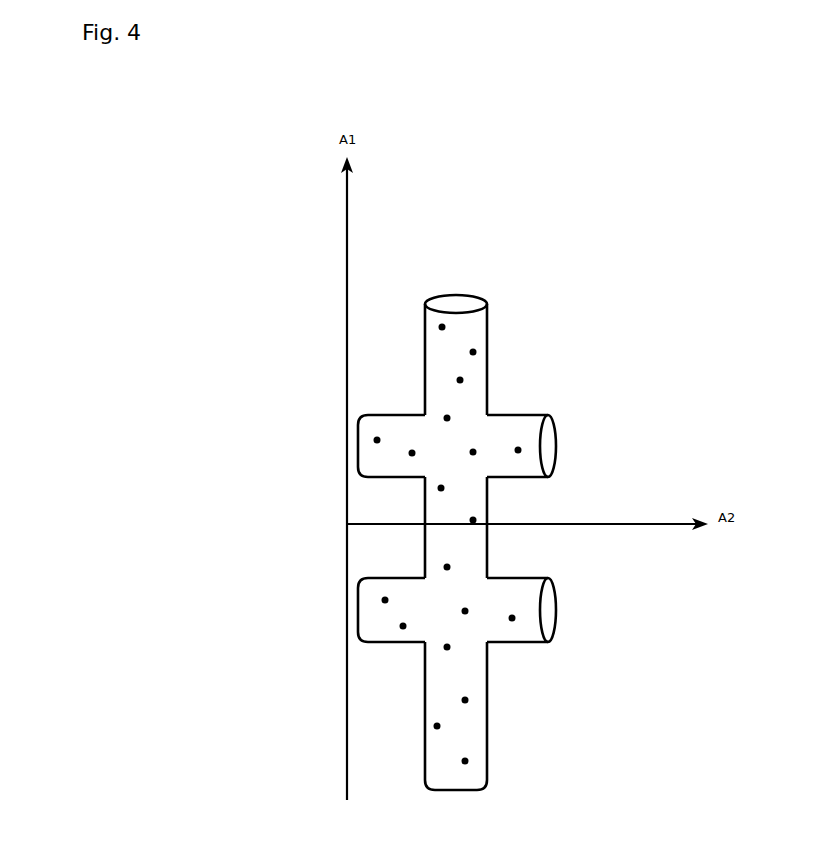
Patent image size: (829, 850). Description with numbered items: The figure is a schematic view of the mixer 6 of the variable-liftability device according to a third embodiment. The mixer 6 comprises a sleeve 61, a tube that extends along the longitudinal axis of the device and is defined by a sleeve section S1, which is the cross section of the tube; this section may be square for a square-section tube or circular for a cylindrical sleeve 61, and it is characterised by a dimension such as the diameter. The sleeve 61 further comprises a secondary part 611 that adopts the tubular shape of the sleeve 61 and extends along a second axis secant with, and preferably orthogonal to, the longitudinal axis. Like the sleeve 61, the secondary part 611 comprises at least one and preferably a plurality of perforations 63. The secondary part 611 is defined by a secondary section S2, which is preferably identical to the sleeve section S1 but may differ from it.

The mixer 6 is at (449, 510).
The sleeve 61 is at (498, 332).
The secondary part 611 is at (551, 412).
The perforations 63 is at (406, 640).
The sleeve section S1 is at (452, 305).
The secondary section S2 is at (550, 457).